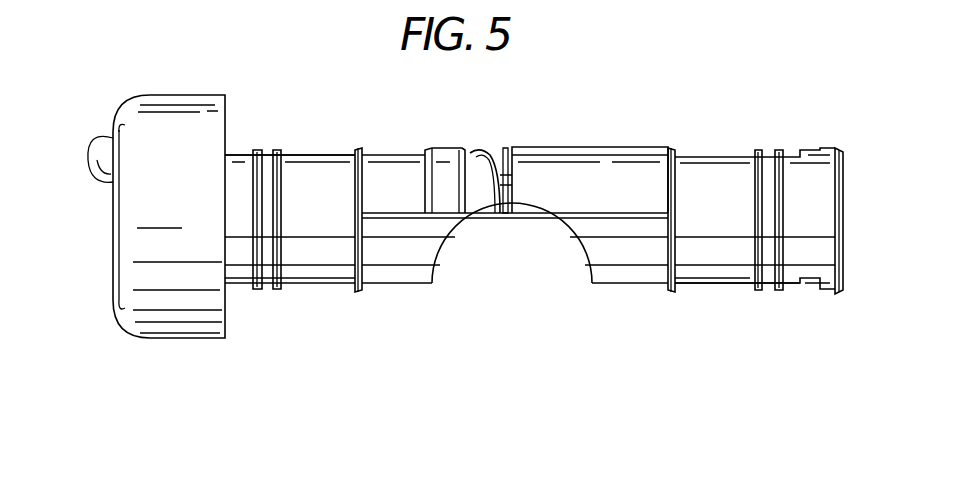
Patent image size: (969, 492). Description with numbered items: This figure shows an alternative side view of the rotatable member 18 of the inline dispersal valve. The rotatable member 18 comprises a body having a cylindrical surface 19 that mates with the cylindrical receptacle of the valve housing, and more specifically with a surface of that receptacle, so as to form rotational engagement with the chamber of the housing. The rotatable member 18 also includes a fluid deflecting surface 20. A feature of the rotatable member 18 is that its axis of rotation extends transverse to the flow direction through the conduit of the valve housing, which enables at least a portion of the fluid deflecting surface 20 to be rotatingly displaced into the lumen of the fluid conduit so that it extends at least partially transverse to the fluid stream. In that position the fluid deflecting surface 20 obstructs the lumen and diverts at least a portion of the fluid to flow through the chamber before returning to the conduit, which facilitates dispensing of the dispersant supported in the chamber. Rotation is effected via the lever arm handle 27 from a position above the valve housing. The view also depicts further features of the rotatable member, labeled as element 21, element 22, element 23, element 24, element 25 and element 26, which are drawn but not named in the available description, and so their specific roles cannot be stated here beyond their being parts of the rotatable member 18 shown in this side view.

The rotatable member 18 is at (670, 118).
The cylindrical surface 19 is at (330, 175).
The fluid deflecting surface 20 is at (468, 232).
The shelf / web 21 is at (572, 218).
The resilient tab 22 is at (504, 160).
The stop block 23 is at (452, 178).
The rear block 24 is at (602, 155).
The front sealing ribs 25 is at (268, 289).
The rear sealing ribs 26 is at (766, 292).
The lever arm handle 27 is at (113, 267).